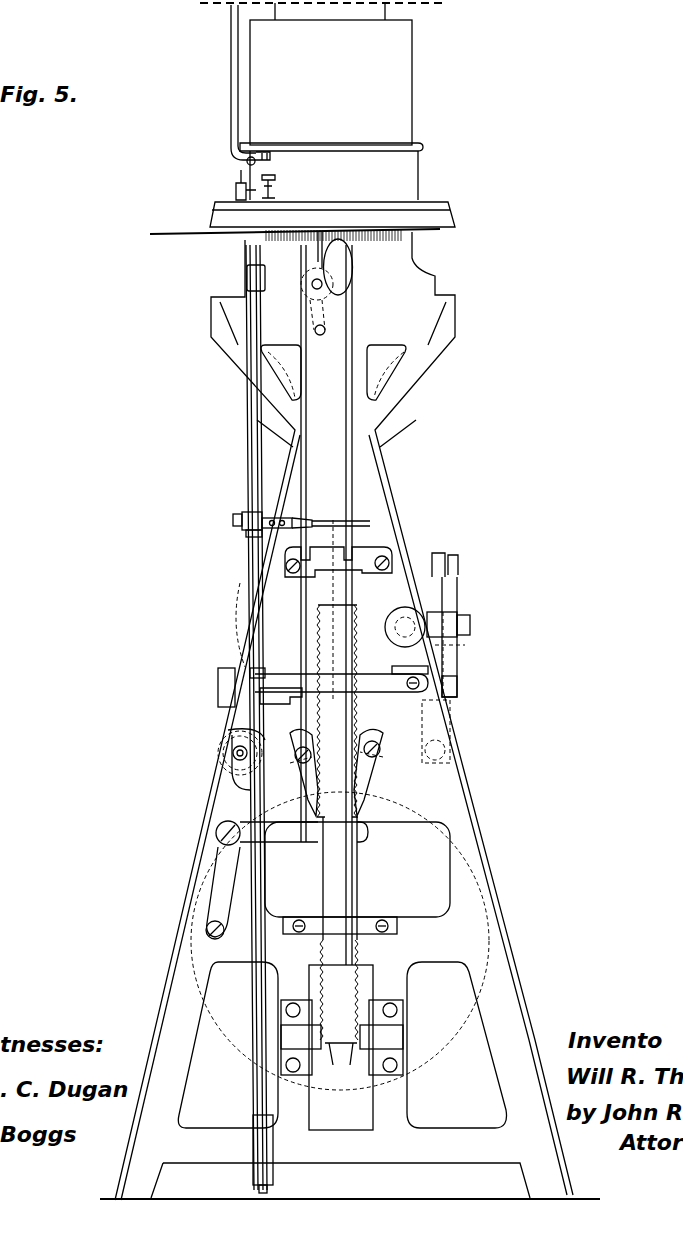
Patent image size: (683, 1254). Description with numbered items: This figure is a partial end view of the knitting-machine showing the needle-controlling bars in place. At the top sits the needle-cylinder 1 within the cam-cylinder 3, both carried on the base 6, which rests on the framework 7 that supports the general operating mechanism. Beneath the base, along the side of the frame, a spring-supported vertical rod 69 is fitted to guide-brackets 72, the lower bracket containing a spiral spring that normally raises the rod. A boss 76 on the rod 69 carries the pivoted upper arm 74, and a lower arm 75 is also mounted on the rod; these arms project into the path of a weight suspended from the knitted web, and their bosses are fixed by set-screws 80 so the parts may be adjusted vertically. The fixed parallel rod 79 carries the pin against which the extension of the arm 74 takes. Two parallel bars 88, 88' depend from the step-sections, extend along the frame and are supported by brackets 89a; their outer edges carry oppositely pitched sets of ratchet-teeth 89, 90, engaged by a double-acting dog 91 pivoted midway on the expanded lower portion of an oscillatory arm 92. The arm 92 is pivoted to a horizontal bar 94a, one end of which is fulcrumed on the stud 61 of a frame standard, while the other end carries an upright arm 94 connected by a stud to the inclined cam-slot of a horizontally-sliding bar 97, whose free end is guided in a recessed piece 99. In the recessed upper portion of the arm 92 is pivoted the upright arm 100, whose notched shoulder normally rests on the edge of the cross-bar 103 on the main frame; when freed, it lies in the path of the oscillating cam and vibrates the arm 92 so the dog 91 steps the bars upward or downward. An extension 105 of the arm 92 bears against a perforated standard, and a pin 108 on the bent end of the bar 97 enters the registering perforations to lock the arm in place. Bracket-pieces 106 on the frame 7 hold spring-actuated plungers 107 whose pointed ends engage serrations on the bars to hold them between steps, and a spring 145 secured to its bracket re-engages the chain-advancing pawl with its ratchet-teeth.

The needle-cylinder 1 is at (386, 10).
The cam-cylinder 3 is at (423, 172).
The base 6 is at (456, 215).
The framework 7 is at (460, 322).
The guide-brackets 72 is at (248, 273).
The spring 145 is at (348, 275).
The parallel bar 88 is at (353, 299).
The parallel bar 88' is at (357, 333).
The fixed parallel rod 79 is at (247, 382).
The spring-supported vertical rod 69 is at (257, 430).
The set-screws 80 is at (238, 522).
The upper arm 74 is at (360, 527).
The cross-bar 103 is at (392, 557).
The boss 76 is at (250, 538).
The upright arm 100 is at (313, 542).
The upper set of ratchet-teeth 89 is at (320, 627).
The horizontally-sliding bar 97 is at (412, 628).
The pin 108 is at (443, 611).
The upright arm 94 is at (478, 643).
The extension 105 is at (400, 672).
The lower arm 75 is at (372, 677).
The recessed piece 99 is at (458, 684).
The double-acting dog 91 is at (293, 773).
The oscillatory arm 92 is at (235, 748).
The stud 61 is at (230, 757).
The horizontal bar 94a is at (405, 760).
The lower set of ratchet-teeth 90 is at (313, 808).
The brackets 89a is at (355, 920).
The bracket-pieces 106 is at (283, 1010).
The spring-actuated plungers 107 is at (341, 1072).